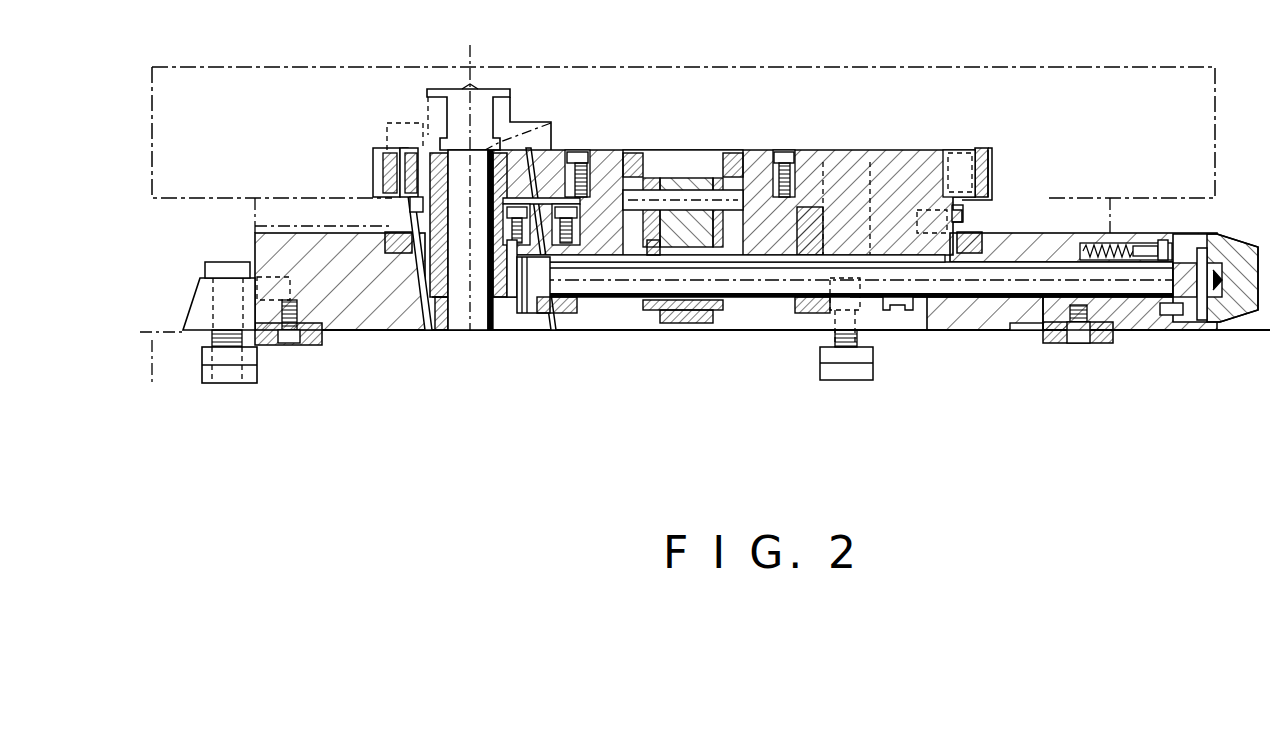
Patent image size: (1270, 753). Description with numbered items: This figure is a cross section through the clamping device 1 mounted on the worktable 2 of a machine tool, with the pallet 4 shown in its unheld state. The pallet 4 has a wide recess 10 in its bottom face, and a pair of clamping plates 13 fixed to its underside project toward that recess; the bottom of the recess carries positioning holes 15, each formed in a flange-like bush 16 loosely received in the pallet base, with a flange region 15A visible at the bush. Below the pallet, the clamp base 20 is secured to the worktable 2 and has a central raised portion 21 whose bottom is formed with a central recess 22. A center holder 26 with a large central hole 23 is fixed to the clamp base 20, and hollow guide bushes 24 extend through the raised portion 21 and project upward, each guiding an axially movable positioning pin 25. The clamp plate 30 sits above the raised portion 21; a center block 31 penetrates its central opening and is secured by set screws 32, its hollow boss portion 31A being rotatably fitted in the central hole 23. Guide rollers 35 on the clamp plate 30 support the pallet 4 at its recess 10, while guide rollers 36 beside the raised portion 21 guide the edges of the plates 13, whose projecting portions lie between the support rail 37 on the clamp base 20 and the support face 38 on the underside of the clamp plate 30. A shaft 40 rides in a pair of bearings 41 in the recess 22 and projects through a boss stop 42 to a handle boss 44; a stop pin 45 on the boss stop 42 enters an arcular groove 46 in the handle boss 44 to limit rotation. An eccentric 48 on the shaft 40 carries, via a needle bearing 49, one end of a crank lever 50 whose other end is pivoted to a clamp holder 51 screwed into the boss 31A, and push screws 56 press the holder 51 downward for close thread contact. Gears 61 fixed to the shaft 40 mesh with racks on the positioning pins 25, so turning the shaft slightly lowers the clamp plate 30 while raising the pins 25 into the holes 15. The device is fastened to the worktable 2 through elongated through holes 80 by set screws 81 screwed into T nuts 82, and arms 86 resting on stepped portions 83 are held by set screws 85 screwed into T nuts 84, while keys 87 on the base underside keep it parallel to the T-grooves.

The clamping device 1 is at (774, 138).
The worktable 2 is at (188, 326).
The pallet 4 is at (1079, 67).
The recess 10 is at (990, 157).
The clamping plates 13 is at (255, 222).
The positioning holes 15 is at (472, 88).
The bolt flange 15A is at (541, 125).
The flange-like bush 16 is at (503, 107).
The clamp base 20 is at (1050, 228).
The central raised portion 21 is at (913, 202).
The central recess 22 is at (764, 323).
The central hole 23 is at (767, 242).
The guide bushes 24 is at (435, 150).
The positioning pin 25 is at (468, 325).
The center holder 26 is at (792, 212).
The clamp plate 30 is at (920, 152).
The center block 31 is at (735, 174).
The hollow cylindrical boss portion 31A is at (663, 153).
The set screws 32 is at (580, 152).
The guide rollers 35 is at (397, 150).
The guide rollers 36 is at (410, 210).
The support rail 37 is at (390, 235).
The support face 38 is at (395, 200).
The shaft 40 is at (1025, 300).
The bearings 41 is at (558, 315).
The boss stop 42 is at (1130, 322).
The handle boss 44 is at (1238, 244).
The stop pin 45 is at (1170, 317).
The arcular groove 46 is at (1192, 322).
The eccentric 48 is at (652, 255).
The needle bearing 49 is at (658, 310).
The crank lever 50 is at (688, 324).
The clamp holder 51 is at (632, 250).
The push screws 56 is at (635, 152).
The gears 61 is at (900, 311).
The through holes 80 is at (880, 157).
The set screws 81 is at (826, 337).
The T nuts 82 is at (847, 382).
The stepped portions 83 is at (258, 258).
The T nuts 84 is at (227, 384).
The set screws 85 is at (213, 340).
The arms 86 is at (200, 280).
The keys 87 is at (318, 345).